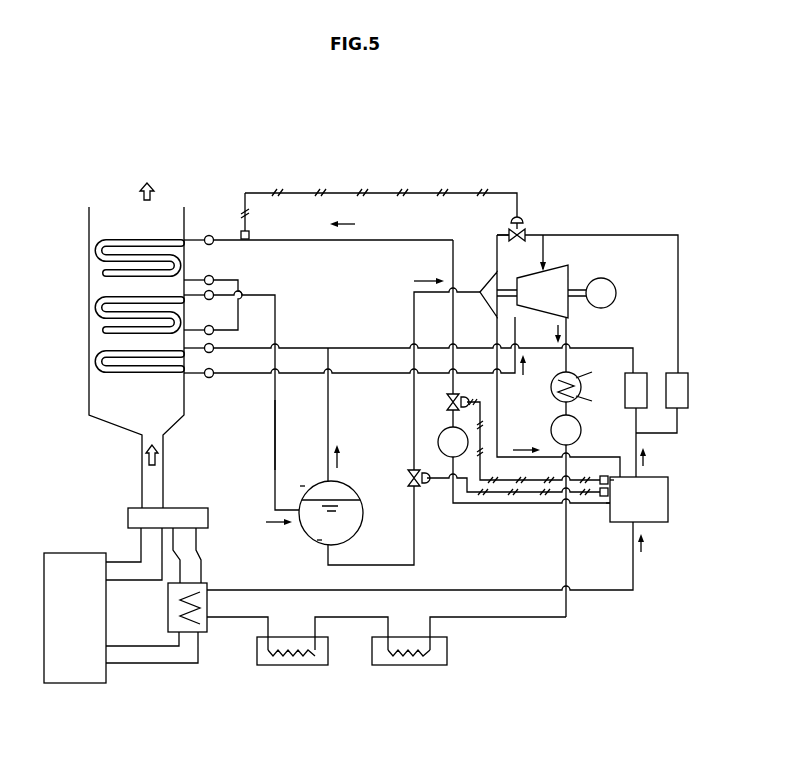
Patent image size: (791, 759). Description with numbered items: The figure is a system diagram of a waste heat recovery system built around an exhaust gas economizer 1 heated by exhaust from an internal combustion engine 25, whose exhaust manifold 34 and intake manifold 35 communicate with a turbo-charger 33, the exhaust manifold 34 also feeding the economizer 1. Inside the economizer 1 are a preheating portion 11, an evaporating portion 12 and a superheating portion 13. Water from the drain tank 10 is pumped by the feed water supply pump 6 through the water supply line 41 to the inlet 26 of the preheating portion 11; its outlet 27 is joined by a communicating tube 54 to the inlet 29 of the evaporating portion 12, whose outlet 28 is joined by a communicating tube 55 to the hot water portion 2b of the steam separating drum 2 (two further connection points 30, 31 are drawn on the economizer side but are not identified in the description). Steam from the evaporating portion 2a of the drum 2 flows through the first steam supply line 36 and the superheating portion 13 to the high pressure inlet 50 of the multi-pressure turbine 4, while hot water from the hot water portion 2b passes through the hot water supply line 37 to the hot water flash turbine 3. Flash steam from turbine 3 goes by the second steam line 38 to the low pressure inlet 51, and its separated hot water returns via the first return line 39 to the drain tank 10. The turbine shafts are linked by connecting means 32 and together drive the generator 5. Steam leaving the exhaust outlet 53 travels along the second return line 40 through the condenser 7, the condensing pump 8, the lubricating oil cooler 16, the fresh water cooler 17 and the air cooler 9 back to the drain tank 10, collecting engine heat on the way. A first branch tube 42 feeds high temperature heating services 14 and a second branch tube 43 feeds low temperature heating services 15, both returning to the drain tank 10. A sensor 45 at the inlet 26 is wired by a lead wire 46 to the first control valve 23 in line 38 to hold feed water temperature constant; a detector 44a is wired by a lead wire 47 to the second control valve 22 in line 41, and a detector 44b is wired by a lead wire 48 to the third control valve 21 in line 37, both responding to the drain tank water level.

The exhaust gas economizer 1 is at (88, 246).
The steam separating drum 2 is at (363, 523).
The evaporating portion 2a is at (313, 487).
The hot water portion 2b is at (320, 543).
The hot water flash turbine 3 is at (484, 277).
The multi-pressure turbine 4 is at (575, 277).
The generator 5 is at (608, 284).
The feed water supply pump 6 is at (436, 440).
The condenser 7 is at (582, 388).
The condensing pump 8 is at (582, 432).
The air cooler 9 is at (207, 585).
The drain tank 10 is at (666, 477).
The preheating portion 11 is at (102, 258).
The evaporating portion 12 is at (102, 315).
The superheating portion 13 is at (102, 370).
The high temperature heating services 14 is at (638, 373).
The low temperature heating services 15 is at (688, 386).
The lubricating oil cooler 16 is at (406, 665).
The fresh water cooler 17 is at (274, 665).
The third control valve 21 is at (406, 478).
The second control valve 22 is at (442, 402).
The first control valve 23 is at (520, 214).
The internal combustion engine 25 is at (70, 560).
The inlet 26 is at (209, 236).
The outlet 27 is at (214, 280).
The outlet 28 is at (214, 297).
The inlet 29 is at (213, 334).
The temperature sensor 30 is at (212, 352).
The temperature sensor 31 is at (208, 377).
The connecting means 32 is at (507, 288).
The turbo-charger 33 is at (128, 512).
The exhaust manifold 34 is at (132, 590).
The intake manifold 35 is at (158, 665).
The first steam supply line 36 is at (276, 382).
The hot water supply line 37 is at (413, 420).
The second steam line 38 is at (497, 238).
The first return line 39 is at (499, 402).
The second return line 40 is at (568, 622).
The water supply line 41 is at (350, 242).
The first branch tube 42 is at (372, 346).
The second branch tube 43 is at (678, 297).
The detector 44a is at (612, 482).
The detector 44b is at (602, 508).
The sensor 45 is at (251, 233).
The lead wire 46 is at (377, 190).
The lead wire 47 is at (473, 491).
The lead wire 48 is at (502, 494).
The high pressure inlet 50 is at (379, 346).
The low pressure inlet 51 is at (562, 276).
The exhaust outlet 53 is at (524, 305).
The communicating tube 54 is at (245, 290).
The communicating tube 55 is at (273, 482).